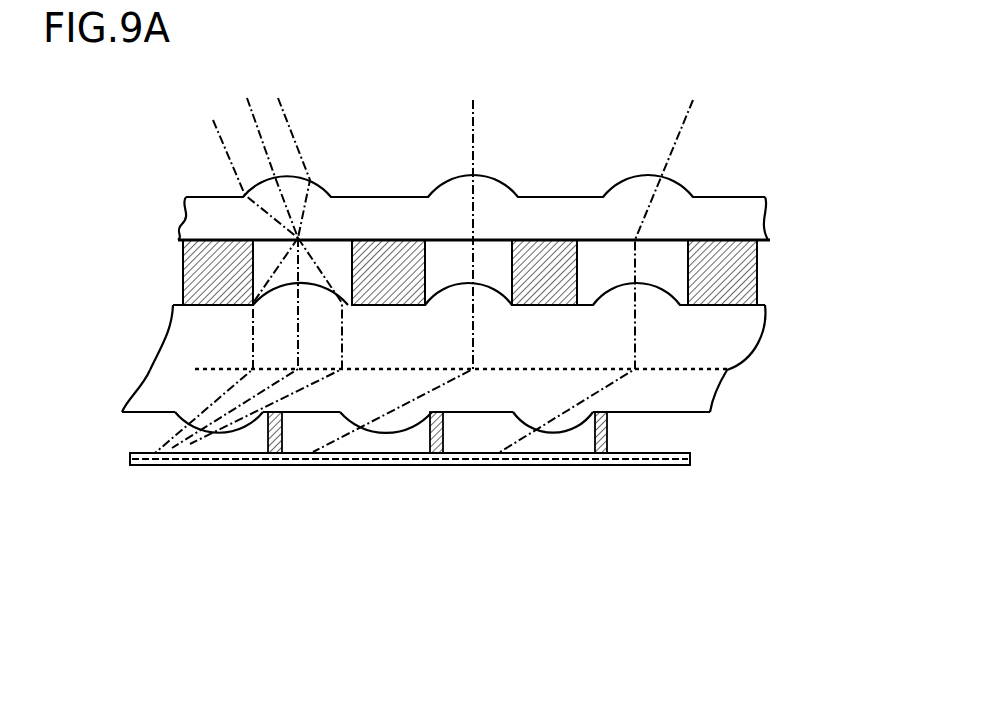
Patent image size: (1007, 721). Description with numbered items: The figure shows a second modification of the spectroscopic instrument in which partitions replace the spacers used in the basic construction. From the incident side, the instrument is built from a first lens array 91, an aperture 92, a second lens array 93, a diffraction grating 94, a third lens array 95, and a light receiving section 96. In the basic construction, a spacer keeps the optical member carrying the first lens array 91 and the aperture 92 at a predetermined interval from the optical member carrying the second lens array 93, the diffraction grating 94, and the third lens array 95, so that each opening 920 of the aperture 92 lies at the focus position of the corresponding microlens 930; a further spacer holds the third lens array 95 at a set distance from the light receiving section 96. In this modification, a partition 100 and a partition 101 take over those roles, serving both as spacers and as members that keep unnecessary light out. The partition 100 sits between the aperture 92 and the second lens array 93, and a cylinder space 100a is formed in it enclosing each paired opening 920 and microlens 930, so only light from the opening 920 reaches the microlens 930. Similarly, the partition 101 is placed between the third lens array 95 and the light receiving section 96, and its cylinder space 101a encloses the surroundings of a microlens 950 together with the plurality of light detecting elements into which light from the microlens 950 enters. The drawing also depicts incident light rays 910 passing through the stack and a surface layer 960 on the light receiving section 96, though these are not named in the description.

The first lens array 91 is at (730, 190).
The aperture 92 is at (677, 238).
The second lens array 93 is at (492, 258).
The diffraction grating 94 is at (720, 372).
The third lens array 95 is at (473, 480).
The light receiving section 96 is at (442, 502).
The partition 100 is at (512, 248).
The cylinder space 100a is at (424, 292).
The partition 101 is at (425, 481).
The cylinder space 101a is at (287, 457).
The incident light ray 910 is at (630, 176).
The opening 920 is at (300, 240).
The microlens 930 is at (490, 285).
The microlens 950 is at (567, 437).
The substrate surface layer 960 is at (365, 463).